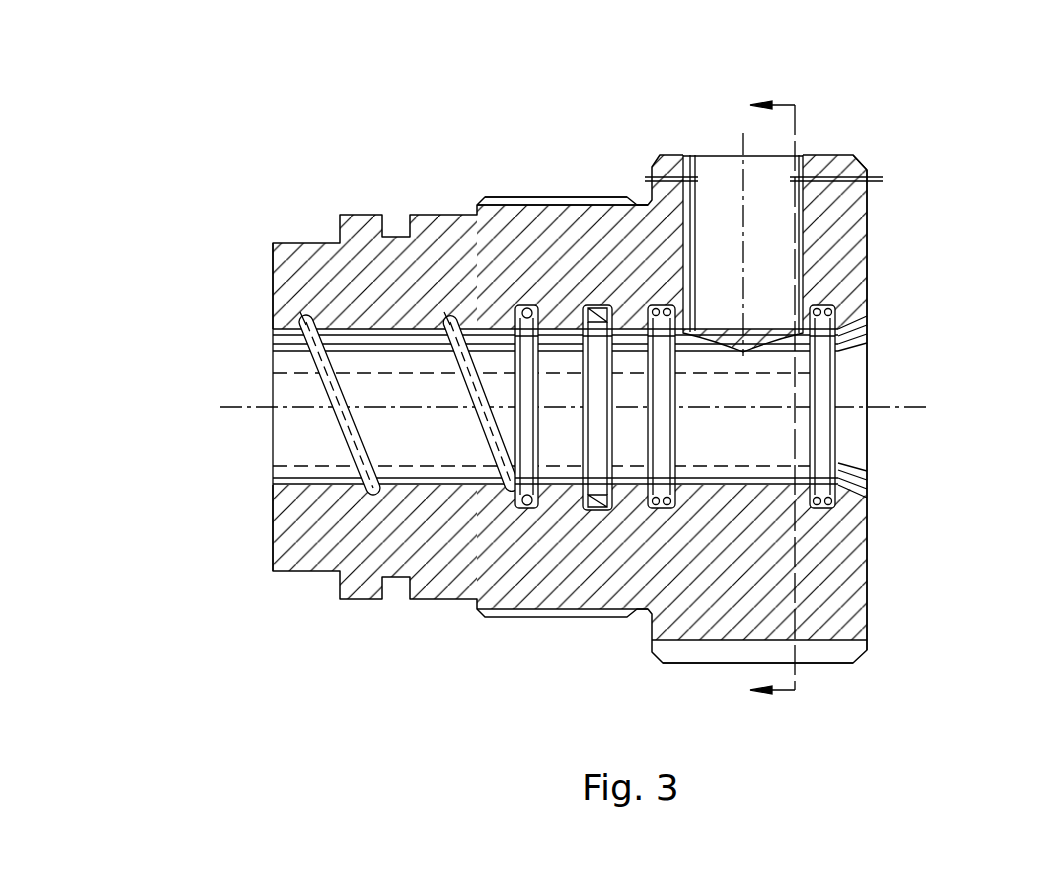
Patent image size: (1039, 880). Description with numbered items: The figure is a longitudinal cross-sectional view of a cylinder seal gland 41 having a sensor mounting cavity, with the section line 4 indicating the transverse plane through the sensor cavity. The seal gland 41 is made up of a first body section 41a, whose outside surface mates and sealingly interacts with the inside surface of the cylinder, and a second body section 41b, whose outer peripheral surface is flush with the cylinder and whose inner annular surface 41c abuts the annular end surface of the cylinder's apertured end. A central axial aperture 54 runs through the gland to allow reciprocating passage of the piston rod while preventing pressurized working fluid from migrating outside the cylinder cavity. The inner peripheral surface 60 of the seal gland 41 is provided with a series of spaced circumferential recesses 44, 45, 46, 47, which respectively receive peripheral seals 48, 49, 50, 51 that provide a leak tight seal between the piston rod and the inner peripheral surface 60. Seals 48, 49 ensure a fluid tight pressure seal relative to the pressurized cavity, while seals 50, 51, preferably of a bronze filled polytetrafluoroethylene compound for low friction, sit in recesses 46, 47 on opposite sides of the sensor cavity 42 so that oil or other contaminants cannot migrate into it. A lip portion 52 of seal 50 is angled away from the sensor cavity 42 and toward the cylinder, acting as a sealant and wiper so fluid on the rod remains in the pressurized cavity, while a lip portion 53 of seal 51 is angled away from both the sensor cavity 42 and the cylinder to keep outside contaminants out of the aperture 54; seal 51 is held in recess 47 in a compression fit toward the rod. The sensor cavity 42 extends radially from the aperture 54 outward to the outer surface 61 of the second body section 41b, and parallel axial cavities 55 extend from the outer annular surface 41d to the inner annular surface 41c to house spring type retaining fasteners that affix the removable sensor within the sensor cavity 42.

The section line 4- 4 is at (772, 403).
The seal gland 41 is at (546, 216).
The first body section 41a is at (375, 540).
The second body section 41b is at (783, 570).
The inner annular surface 41c is at (648, 190).
The outer annular surface 41d is at (868, 245).
The sensor cavity 42 is at (748, 168).
The circumferential recess 44 is at (516, 512).
The circumferential recess 45 is at (582, 505).
The circumferential recess 46 is at (673, 509).
The circumferential recess 47 is at (868, 495).
The peripheral seal 48 is at (527, 306).
The peripheral seal 49 is at (596, 305).
The peripheral seal 50 is at (690, 177).
The peripheral seal 51 is at (868, 313).
The lip portion 52 is at (870, 393).
The lip portion 53 is at (868, 352).
The central axial aperture 54 is at (303, 437).
The parallel axial cavities 55 is at (645, 179).
The inner peripheral surface 60 is at (270, 350).
The outer surface 61 is at (845, 154).